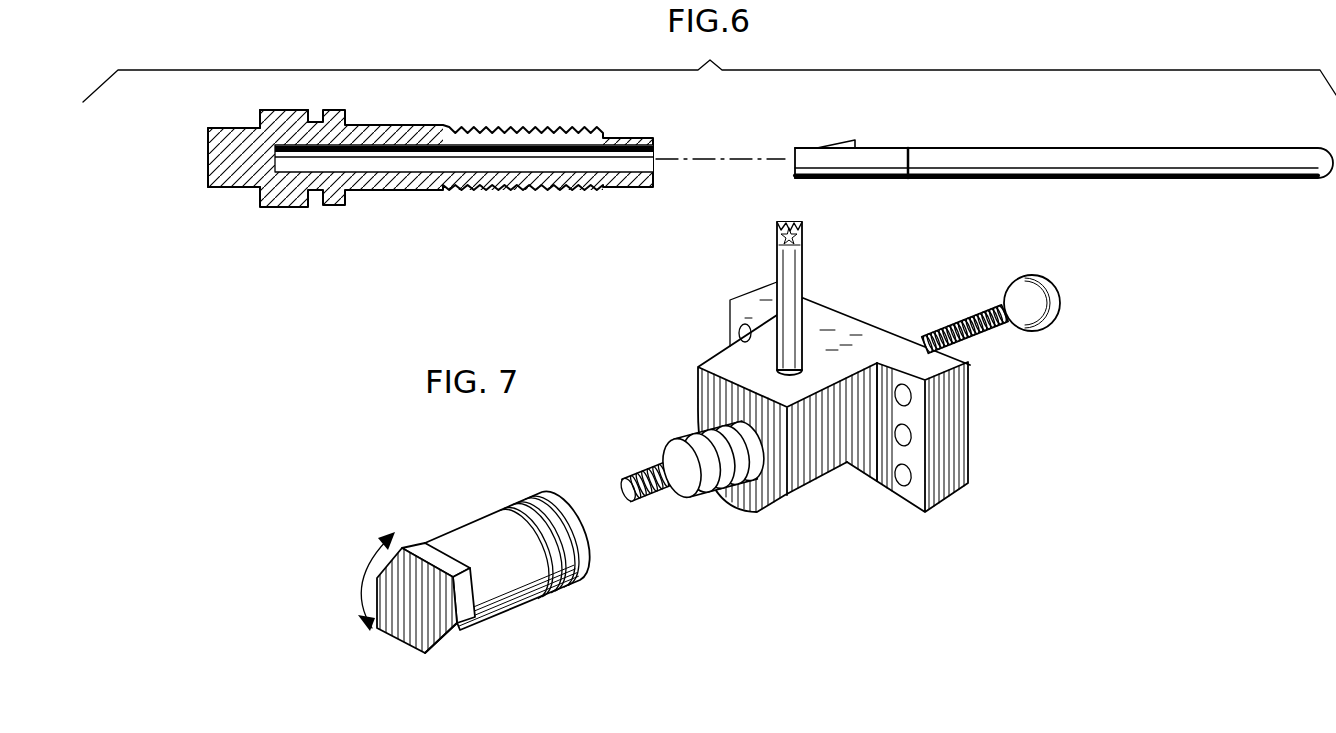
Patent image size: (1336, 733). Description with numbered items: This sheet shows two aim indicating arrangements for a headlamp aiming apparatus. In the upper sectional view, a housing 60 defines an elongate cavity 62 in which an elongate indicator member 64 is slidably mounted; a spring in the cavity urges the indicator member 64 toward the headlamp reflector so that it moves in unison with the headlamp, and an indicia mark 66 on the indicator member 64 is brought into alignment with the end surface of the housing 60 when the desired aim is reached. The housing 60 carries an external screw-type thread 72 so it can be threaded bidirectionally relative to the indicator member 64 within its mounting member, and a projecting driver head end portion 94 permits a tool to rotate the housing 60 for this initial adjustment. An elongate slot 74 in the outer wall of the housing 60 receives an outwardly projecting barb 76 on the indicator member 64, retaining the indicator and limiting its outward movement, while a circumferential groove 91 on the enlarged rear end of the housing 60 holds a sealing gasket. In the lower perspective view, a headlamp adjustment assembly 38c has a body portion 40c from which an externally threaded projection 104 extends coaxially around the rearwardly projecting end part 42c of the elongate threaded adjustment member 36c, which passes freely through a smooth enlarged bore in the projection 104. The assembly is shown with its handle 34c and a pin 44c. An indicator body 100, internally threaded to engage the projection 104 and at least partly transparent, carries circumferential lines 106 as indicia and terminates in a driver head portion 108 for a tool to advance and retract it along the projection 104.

In FIG. 6, the housing 60 is at (393, 195).
In FIG. 6, the elongate cavity 62 is at (518, 165).
In FIG. 6, the elongate indicator member 64 is at (1085, 160).
In FIG. 6, the indicia mark 66 is at (912, 155).
In FIG. 6, the external screw-type thread 72 is at (598, 190).
In FIG. 6, the elongate slot 74 is at (505, 135).
In FIG. 6, the barb 76 is at (845, 142).
In FIG. 6, the circumferential groove 91 is at (314, 110).
In FIG. 6, the driver head end portion 94 is at (218, 190).
In FIG. 7, the ball handle 34c is at (1030, 282).
In FIG. 7, the elongate threaded adjustment member 36c is at (997, 338).
In FIG. 7, the headlamp adjustment assembly 38c is at (890, 512).
In FIG. 7, the body portion 40c is at (947, 503).
In FIG. 7, the rearwardly projecting end part 42c is at (660, 500).
In FIG. 7, the pin 44c is at (802, 272).
In FIG. 7, the indicator body 100 is at (474, 551).
In FIG. 7, the externally threaded projection 104 is at (692, 440).
In FIG. 7, the circumferential lines 106 is at (475, 506).
In FIG. 7, the driver head portion 108 is at (447, 642).